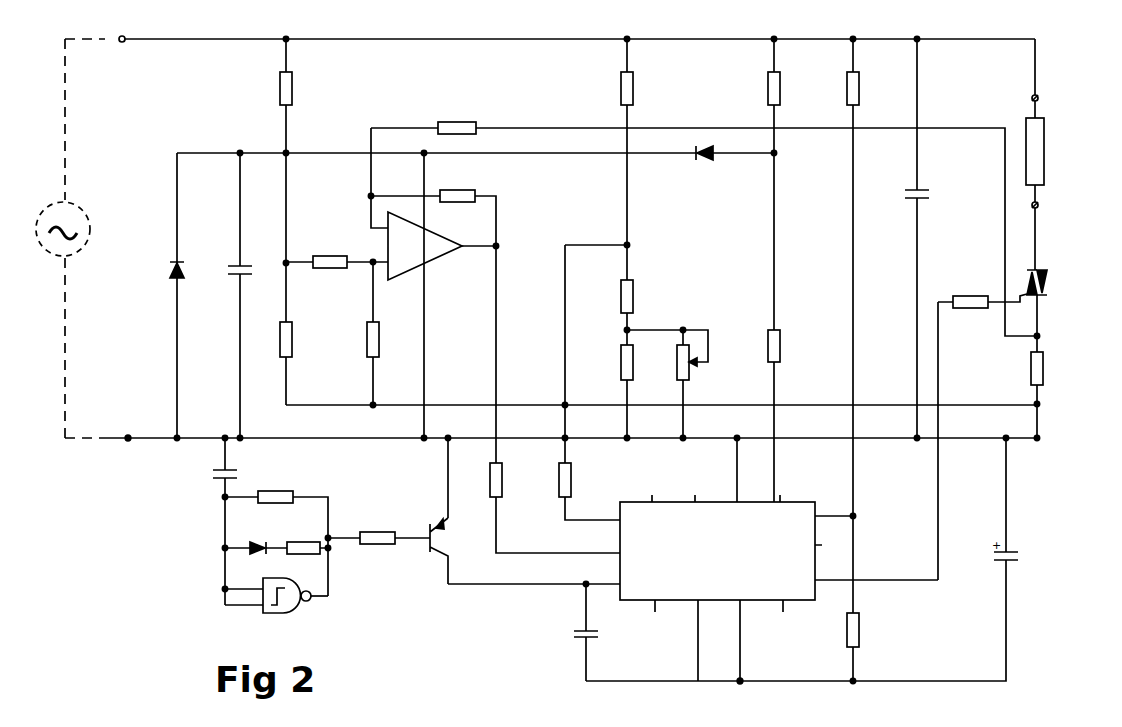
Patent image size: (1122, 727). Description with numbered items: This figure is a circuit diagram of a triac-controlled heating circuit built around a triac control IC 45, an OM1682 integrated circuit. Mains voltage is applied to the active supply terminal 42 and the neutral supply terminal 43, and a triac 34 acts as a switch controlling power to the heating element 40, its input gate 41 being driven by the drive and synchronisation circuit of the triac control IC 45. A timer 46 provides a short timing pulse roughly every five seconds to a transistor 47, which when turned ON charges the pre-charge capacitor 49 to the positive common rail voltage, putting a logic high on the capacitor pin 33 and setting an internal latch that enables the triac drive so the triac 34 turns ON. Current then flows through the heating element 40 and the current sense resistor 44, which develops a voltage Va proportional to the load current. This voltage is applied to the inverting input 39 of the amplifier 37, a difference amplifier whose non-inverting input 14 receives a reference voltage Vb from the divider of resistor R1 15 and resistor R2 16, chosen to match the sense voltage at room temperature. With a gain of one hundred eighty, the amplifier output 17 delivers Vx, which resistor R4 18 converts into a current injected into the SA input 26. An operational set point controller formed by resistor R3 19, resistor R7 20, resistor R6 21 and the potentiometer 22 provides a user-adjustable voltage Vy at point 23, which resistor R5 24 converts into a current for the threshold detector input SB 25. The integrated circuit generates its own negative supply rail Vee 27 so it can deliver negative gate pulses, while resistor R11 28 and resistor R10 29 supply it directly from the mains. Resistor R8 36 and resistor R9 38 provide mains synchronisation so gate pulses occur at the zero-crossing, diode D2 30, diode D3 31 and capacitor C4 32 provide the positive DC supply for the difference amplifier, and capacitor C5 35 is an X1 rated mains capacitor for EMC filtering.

The non-inverting input 14 is at (392, 268).
The resistor R1 15 is at (280, 88).
The resistor R2 16 is at (286, 338).
The amplifier output 17 is at (460, 250).
The resistor R4 18 is at (505, 478).
The resistor R3 19 is at (633, 88).
The resistor R7 20 is at (633, 296).
The resistor R6 21 is at (625, 360).
The potentiometer 22 is at (690, 368).
The voltage Vy point 23 is at (630, 247).
The resistor R5 24 is at (572, 478).
The threshold detector input SB 25 is at (616, 521).
The SA input 26 is at (616, 555).
The negative supply rail Vee 27 is at (743, 680).
The resistor R11 28 is at (768, 88).
The resistor R10 29 is at (781, 346).
The diode D2 30 is at (708, 160).
The diode D3 31 is at (170, 270).
The capacitor C4 32 is at (236, 275).
The capacitor pin 33 is at (596, 590).
The triac 34 is at (1040, 272).
The capacitor C5 35 is at (930, 197).
The resistor R8 36 is at (866, 630).
The amplifier 37 is at (413, 252).
The resistor R9 38 is at (858, 88).
The inverting input 39 is at (386, 230).
The heating element 40 is at (1046, 150).
The input gate 41 is at (1036, 300).
The active supply terminal 42 is at (124, 42).
The neutral supply terminal 43 is at (130, 441).
The current sense resistor 44 is at (1046, 370).
The triac control IC 45 is at (758, 543).
The timer 46 is at (345, 586).
The transistor 47 is at (425, 546).
The pre-charge capacitor 49 is at (580, 638).